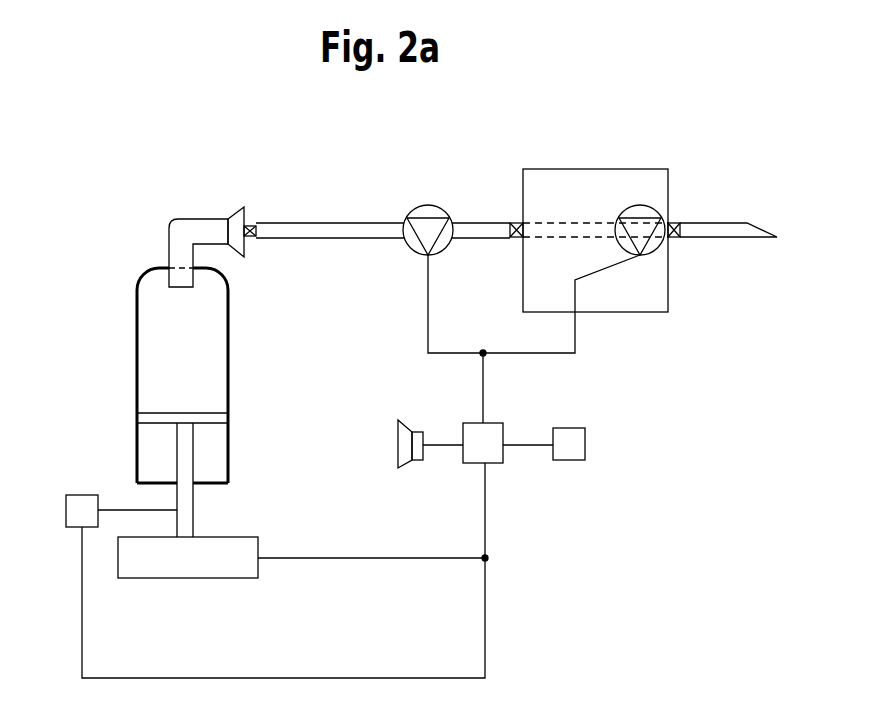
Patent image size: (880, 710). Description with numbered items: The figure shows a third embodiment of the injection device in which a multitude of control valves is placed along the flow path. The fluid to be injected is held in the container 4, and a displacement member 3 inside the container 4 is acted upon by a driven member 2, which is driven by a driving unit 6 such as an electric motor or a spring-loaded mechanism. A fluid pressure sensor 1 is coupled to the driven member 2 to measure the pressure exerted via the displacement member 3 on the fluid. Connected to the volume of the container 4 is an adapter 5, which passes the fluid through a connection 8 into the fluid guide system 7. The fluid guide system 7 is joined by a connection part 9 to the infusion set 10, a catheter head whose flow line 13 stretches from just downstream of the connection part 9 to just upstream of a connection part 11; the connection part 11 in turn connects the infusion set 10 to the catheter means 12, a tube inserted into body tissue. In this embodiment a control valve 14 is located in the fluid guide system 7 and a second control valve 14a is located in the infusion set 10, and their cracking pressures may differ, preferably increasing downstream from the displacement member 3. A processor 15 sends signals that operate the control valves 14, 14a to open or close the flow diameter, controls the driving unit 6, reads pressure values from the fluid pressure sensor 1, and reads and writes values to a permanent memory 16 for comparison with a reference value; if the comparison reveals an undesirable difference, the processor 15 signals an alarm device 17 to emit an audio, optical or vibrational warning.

The fluid pressure sensor 1 is at (215, 565).
The driven member 2 is at (185, 510).
The displacement member 3 is at (212, 420).
The container 4 is at (210, 360).
The adapter 5 is at (188, 232).
The driving unit 6 is at (83, 505).
The fluid guide system 7 is at (318, 230).
The connection 8 is at (253, 226).
The connection part 9 is at (507, 224).
The infusion set 10 is at (585, 185).
The connection part 11 is at (676, 224).
The catheter means 12 is at (707, 232).
The flow line 13 is at (548, 232).
The control valve 14 is at (410, 245).
The control valve 14a is at (660, 252).
The processor 15 is at (490, 452).
The permanent memory 16 is at (568, 448).
The alarm device 17 is at (403, 447).